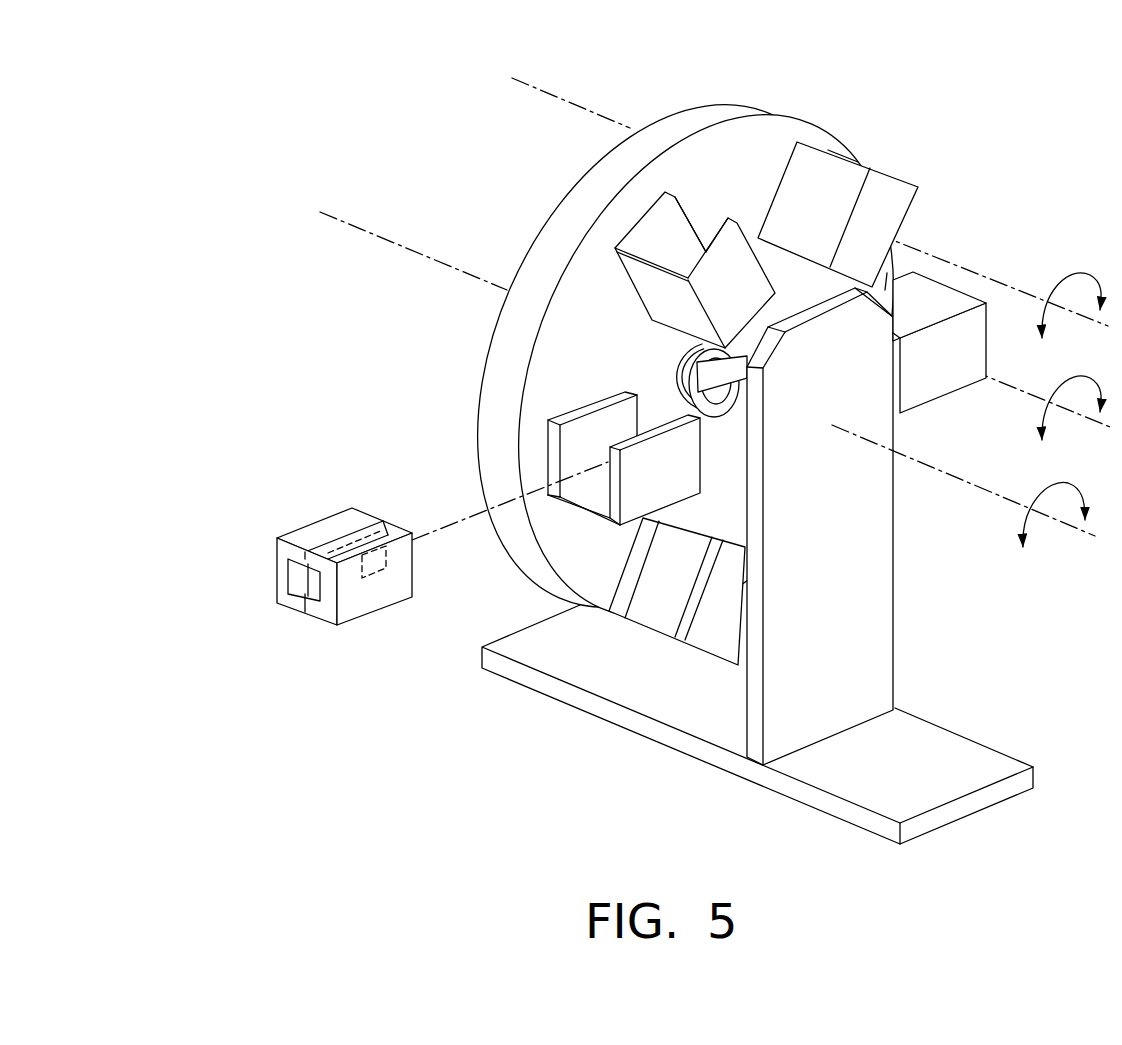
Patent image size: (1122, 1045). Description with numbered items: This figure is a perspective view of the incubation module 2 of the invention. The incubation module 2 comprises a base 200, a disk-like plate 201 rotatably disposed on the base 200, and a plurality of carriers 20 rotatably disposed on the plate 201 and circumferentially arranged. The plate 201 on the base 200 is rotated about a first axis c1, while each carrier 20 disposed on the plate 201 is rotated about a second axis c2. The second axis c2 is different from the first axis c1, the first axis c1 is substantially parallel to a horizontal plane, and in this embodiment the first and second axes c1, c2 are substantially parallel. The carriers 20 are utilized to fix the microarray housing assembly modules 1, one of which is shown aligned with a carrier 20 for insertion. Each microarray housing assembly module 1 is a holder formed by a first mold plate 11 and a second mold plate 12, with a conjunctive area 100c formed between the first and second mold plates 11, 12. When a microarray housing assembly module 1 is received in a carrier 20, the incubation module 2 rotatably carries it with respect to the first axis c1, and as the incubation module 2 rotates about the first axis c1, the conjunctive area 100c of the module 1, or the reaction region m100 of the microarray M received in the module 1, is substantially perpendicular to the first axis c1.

The incubation module 2 is at (673, 460).
The disk-like plate 201 is at (767, 113).
The carrier 20 is at (661, 491).
The base 200 is at (786, 800).
The first axis c1 is at (695, 368).
The second axis c2 is at (793, 246).
The microarray housing assembly module 1 is at (316, 565).
The first mold plate 11 is at (285, 613).
The second mold plate 12 is at (318, 627).
The conjunctive area 100c is at (343, 535).
The reaction region m100 is at (408, 550).
The microarray M is at (370, 622).